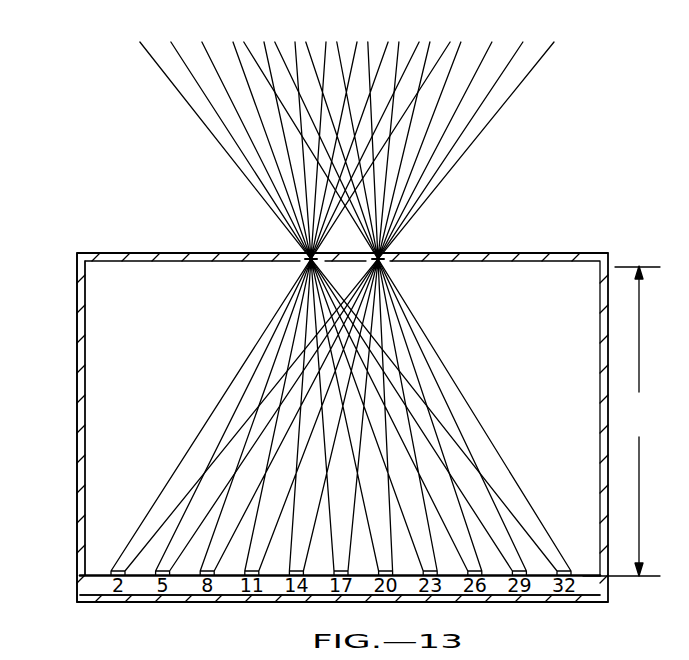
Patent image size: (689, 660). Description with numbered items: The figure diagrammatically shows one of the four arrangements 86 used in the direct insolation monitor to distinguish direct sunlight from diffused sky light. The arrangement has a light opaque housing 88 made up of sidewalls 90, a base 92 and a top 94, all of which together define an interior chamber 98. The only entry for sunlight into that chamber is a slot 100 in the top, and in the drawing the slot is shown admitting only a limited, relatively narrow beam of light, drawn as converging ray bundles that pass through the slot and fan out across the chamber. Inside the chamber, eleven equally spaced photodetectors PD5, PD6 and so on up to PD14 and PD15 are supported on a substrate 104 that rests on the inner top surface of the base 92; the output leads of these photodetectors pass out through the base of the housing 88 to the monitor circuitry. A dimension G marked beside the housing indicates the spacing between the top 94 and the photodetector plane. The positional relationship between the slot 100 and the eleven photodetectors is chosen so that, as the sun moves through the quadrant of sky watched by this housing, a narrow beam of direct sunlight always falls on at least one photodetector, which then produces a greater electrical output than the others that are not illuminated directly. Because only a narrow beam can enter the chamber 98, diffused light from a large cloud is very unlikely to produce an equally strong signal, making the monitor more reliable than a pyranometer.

The arrangement 86 is at (167, 234).
The light opaque housing 88 is at (72, 412).
The sidewalls 90 is at (77, 310).
The base 92 is at (118, 600).
The top 94 is at (262, 256).
The interior chamber 98 is at (541, 369).
The slot 100 is at (364, 266).
The substrate 104 is at (175, 592).
The photodetector PD5 is at (112, 563).
The photodetector PD6 is at (170, 563).
The photodetector PD14 is at (518, 566).
The photodetector PD15 is at (577, 569).
The gap distance between pinhole plate and detectors G is at (621, 421).